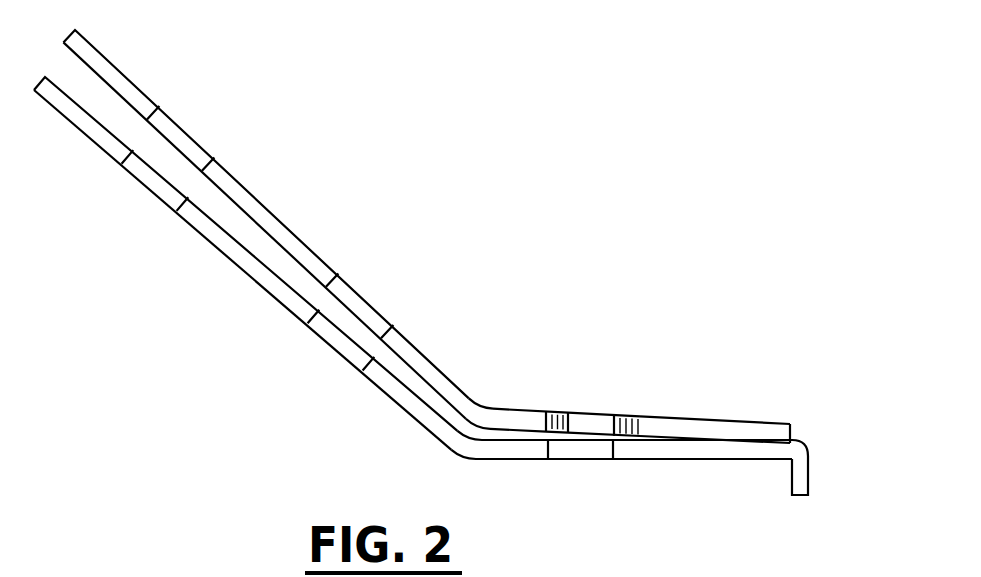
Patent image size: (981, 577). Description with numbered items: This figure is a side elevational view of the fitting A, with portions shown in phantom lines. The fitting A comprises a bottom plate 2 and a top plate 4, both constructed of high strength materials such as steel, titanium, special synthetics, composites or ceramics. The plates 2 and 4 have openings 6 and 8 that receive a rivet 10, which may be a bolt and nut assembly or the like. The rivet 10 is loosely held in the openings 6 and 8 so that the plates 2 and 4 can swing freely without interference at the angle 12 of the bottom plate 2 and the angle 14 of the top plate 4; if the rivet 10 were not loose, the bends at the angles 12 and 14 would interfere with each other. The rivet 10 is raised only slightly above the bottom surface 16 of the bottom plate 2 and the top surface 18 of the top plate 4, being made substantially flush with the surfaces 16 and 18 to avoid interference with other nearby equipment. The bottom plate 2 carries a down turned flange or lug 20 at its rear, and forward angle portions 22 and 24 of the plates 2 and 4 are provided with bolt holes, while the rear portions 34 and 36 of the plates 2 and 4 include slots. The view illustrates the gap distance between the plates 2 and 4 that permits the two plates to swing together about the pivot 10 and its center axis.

The fitting A is at (402, 297).
The bottom plate 2 is at (280, 302).
The top plate 4 is at (310, 249).
The opening 6 is at (742, 455).
The opening 8 is at (744, 455).
The rivet 10 is at (700, 460).
The angle of plate 2 12 is at (457, 423).
The angle of plate 4 14 is at (478, 407).
The bottom surface 16 is at (528, 460).
The top surface 18 is at (532, 410).
The down turned flange or lug 20 is at (810, 494).
The forward angle portion 22 is at (238, 266).
The forward angle portion 24 is at (273, 215).
The rear portion 34 is at (633, 462).
The rear portion 36 is at (623, 413).